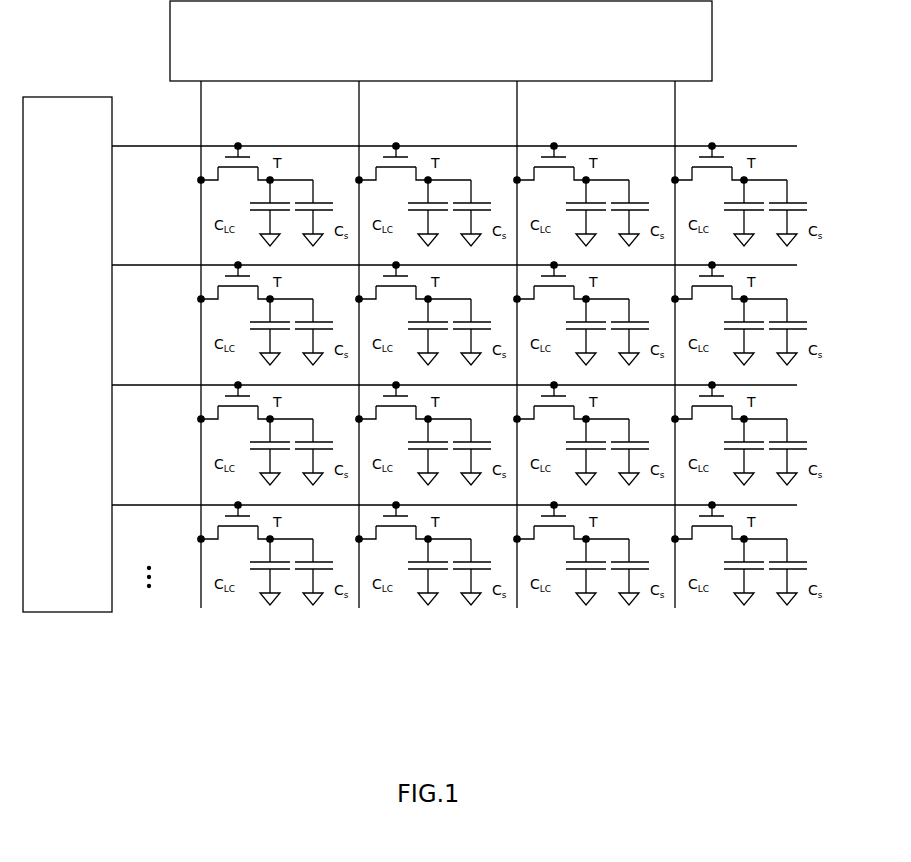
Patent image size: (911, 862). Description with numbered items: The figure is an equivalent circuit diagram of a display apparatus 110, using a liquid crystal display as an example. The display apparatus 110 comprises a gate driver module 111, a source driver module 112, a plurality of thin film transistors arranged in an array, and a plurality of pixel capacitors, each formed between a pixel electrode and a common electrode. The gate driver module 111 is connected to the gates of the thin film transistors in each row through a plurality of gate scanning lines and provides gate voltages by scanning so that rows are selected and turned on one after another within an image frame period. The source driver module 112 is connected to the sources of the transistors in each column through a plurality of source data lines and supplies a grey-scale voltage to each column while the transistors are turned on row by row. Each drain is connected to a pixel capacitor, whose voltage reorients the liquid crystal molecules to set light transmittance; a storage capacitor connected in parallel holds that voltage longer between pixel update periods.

The display apparatus 110 is at (713, 666).
The gate driver module 111 is at (96, 338).
The source driver module 112 is at (456, 68).